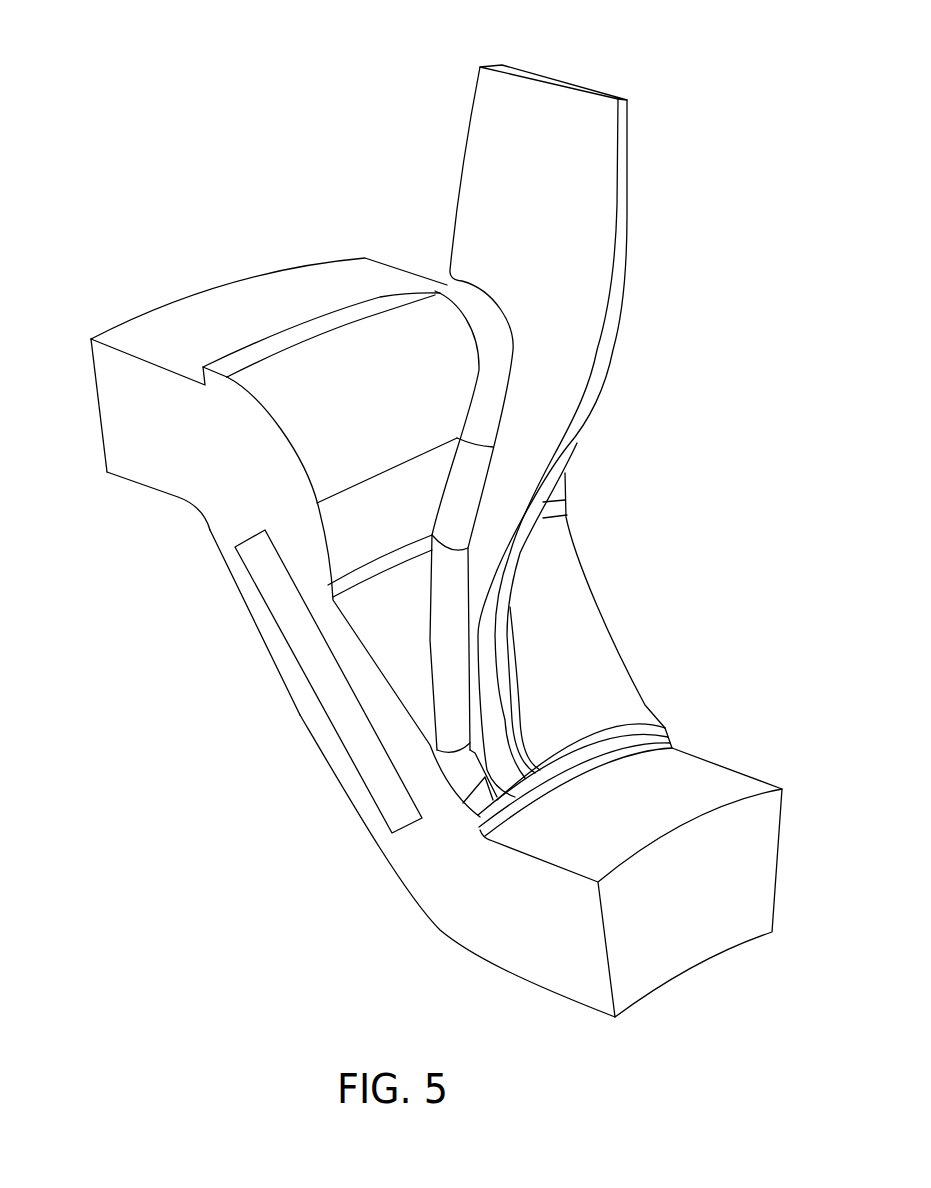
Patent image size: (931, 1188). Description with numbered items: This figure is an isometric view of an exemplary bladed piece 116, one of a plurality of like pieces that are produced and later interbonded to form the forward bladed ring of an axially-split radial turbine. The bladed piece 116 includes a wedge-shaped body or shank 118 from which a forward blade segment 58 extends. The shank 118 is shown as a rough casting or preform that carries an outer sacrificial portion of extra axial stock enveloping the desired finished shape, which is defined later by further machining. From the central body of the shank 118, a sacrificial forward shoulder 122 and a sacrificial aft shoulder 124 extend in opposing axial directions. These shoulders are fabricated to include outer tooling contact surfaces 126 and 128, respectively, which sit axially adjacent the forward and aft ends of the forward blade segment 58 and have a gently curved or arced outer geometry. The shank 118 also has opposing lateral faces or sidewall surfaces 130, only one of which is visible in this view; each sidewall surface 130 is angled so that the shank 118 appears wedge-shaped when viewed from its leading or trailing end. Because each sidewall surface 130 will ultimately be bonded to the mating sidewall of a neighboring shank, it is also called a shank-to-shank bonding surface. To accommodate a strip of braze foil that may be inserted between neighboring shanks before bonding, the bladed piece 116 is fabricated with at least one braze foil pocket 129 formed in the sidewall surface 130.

The bladed piece 116 is at (215, 121).
The forward blade segment 58 is at (607, 200).
The outer tooling contact surface 126 is at (226, 294).
The sacrificial forward shoulder 122 is at (108, 420).
The sidewall surface 130 is at (272, 652).
The shank 118 is at (276, 721).
The braze foil pocket 129 is at (358, 762).
The outer tooling contact surface 128 is at (718, 775).
The sacrificial aft shoulder 124 is at (772, 862).